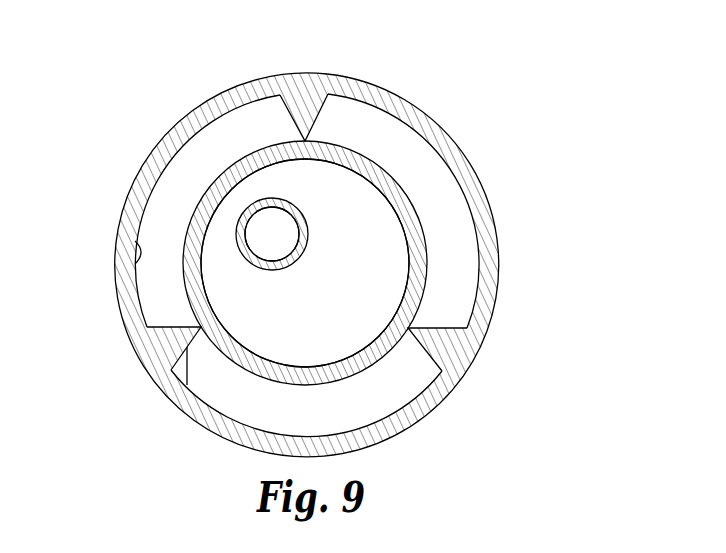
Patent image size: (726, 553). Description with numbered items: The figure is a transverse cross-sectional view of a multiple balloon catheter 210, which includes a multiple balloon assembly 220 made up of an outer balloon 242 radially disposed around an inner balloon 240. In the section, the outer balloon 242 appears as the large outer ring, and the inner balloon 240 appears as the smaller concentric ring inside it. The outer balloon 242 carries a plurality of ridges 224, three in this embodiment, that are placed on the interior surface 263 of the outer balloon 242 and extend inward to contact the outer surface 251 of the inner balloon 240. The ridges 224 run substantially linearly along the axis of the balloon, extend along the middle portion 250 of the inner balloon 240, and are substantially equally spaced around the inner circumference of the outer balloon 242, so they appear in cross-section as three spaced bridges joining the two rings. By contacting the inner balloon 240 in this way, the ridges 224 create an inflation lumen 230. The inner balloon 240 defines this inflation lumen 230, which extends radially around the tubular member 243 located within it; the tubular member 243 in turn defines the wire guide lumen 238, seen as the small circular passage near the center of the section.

The multiple balloon catheter 210 is at (301, 233).
The multiple balloon assembly 220 is at (301, 233).
The ridges 224 is at (185, 350).
The inflation lumen 230 is at (382, 295).
The wire guide lumen 238 is at (292, 247).
The inner balloon 240 is at (345, 148).
The outer balloon 242 is at (430, 118).
The tubular member 243 is at (246, 256).
The middle portion 250 is at (422, 288).
The outer surface 251 is at (197, 207).
The interior surface 263 is at (135, 250).